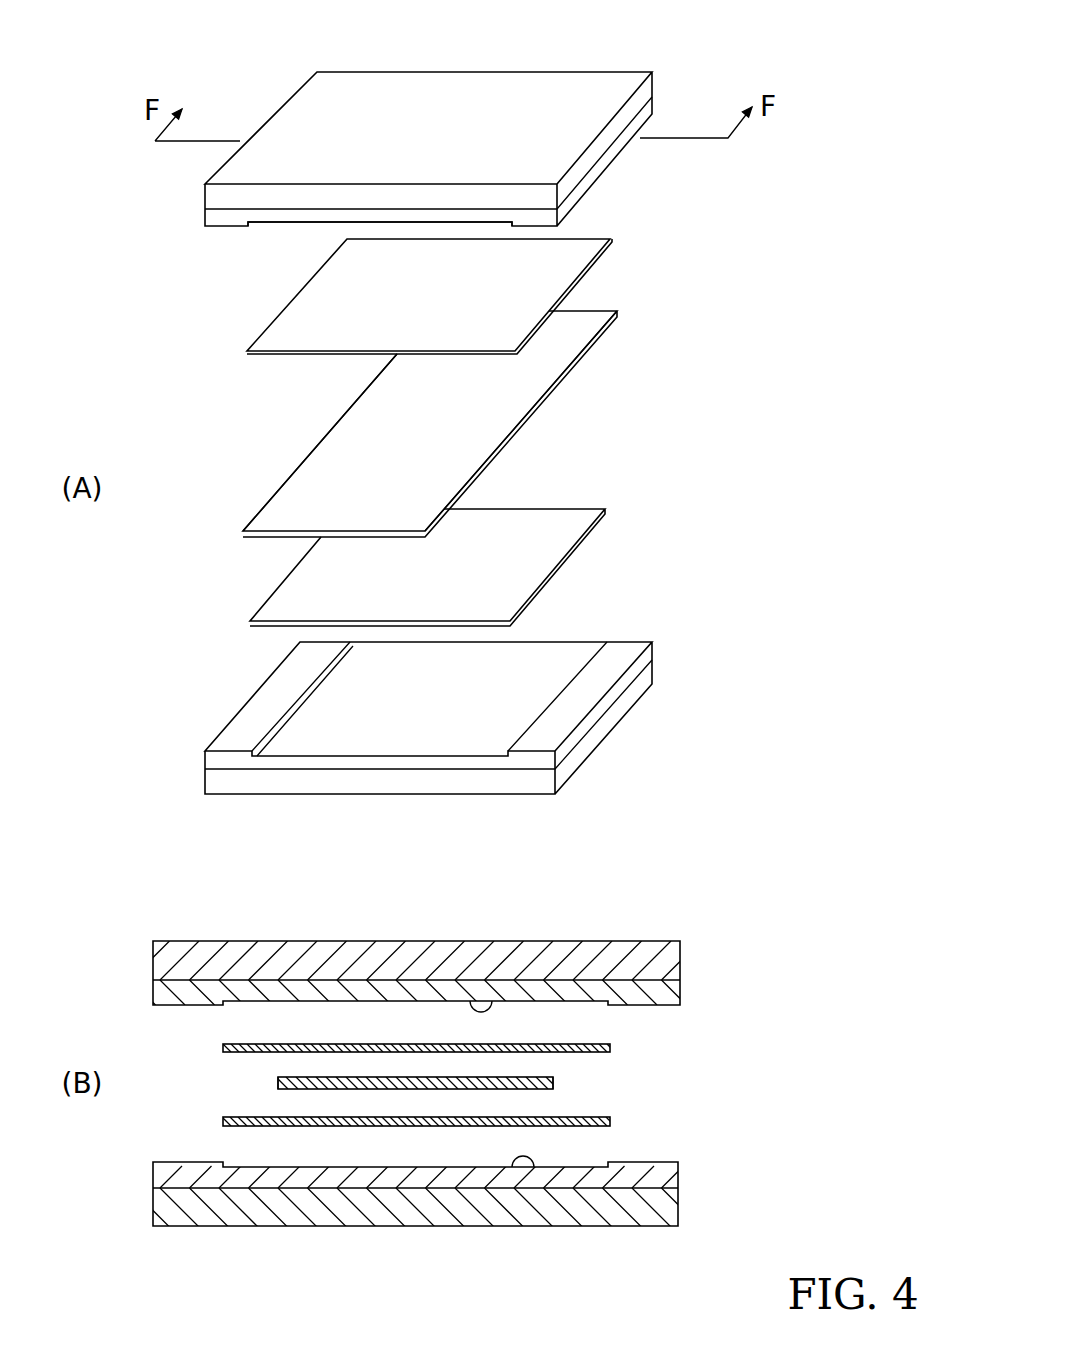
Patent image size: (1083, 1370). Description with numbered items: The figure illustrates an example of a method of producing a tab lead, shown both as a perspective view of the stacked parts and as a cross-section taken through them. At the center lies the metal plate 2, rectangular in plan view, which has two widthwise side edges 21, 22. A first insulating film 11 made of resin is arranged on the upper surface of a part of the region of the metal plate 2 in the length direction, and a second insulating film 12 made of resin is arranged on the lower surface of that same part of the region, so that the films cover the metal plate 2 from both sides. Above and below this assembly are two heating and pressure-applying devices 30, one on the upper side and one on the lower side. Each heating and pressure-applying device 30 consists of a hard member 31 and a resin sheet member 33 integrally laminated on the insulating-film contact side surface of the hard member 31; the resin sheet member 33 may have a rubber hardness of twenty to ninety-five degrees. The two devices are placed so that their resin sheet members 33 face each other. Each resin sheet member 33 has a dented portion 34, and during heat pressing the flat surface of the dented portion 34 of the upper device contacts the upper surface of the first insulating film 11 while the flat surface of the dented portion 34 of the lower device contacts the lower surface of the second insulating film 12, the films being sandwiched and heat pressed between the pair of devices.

The metal plate 2 is at (552, 350).
The first insulating film 11 is at (570, 265).
The second insulating film 12 is at (577, 528).
The widthwise side edge 21 is at (325, 433).
The widthwise side edge 22 is at (540, 410).
The heating and pressure-applying device 30 is at (583, 97).
The hard member 31 is at (653, 85).
The resin sheet member 33 is at (657, 108).
The dented portion 34 is at (282, 227).